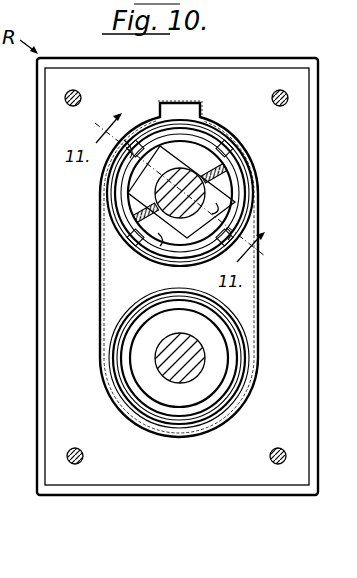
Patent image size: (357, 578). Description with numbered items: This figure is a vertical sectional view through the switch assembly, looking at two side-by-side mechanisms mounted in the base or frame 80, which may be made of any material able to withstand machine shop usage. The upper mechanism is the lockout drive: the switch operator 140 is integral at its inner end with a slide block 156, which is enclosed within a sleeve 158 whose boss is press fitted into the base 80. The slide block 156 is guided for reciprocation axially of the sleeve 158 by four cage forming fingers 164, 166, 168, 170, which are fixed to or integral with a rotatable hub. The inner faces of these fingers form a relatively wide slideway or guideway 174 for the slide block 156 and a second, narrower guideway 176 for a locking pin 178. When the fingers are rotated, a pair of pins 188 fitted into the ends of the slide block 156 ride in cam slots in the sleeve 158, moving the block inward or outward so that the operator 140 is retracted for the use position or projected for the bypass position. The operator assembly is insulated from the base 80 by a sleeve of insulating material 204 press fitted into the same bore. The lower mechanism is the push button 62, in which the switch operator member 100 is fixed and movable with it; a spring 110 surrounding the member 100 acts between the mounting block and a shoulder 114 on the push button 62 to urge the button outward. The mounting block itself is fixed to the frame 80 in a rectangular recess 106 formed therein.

The base or frame 80 is at (172, 495).
The rectangular recess 106 is at (220, 481).
The slide block 156 is at (253, 210).
The switch operator 140 is at (249, 162).
The sleeve 158 is at (205, 117).
The second and narrower guideway 176 is at (233, 148).
The sleeve of insulating material 204 is at (214, 128).
The cage forming finger 164 is at (177, 148).
The cage forming finger 170 is at (150, 205).
The locking pin 178 is at (165, 217).
The slideway or guideway 174 is at (107, 180).
The cage forming finger 166 is at (158, 235).
The cage forming finger 168 is at (222, 195).
The pins 188 is at (127, 133).
The spring 110 is at (223, 405).
The push button 62 is at (216, 343).
The shoulder 114 is at (215, 360).
The switch operator member 100 is at (168, 382).